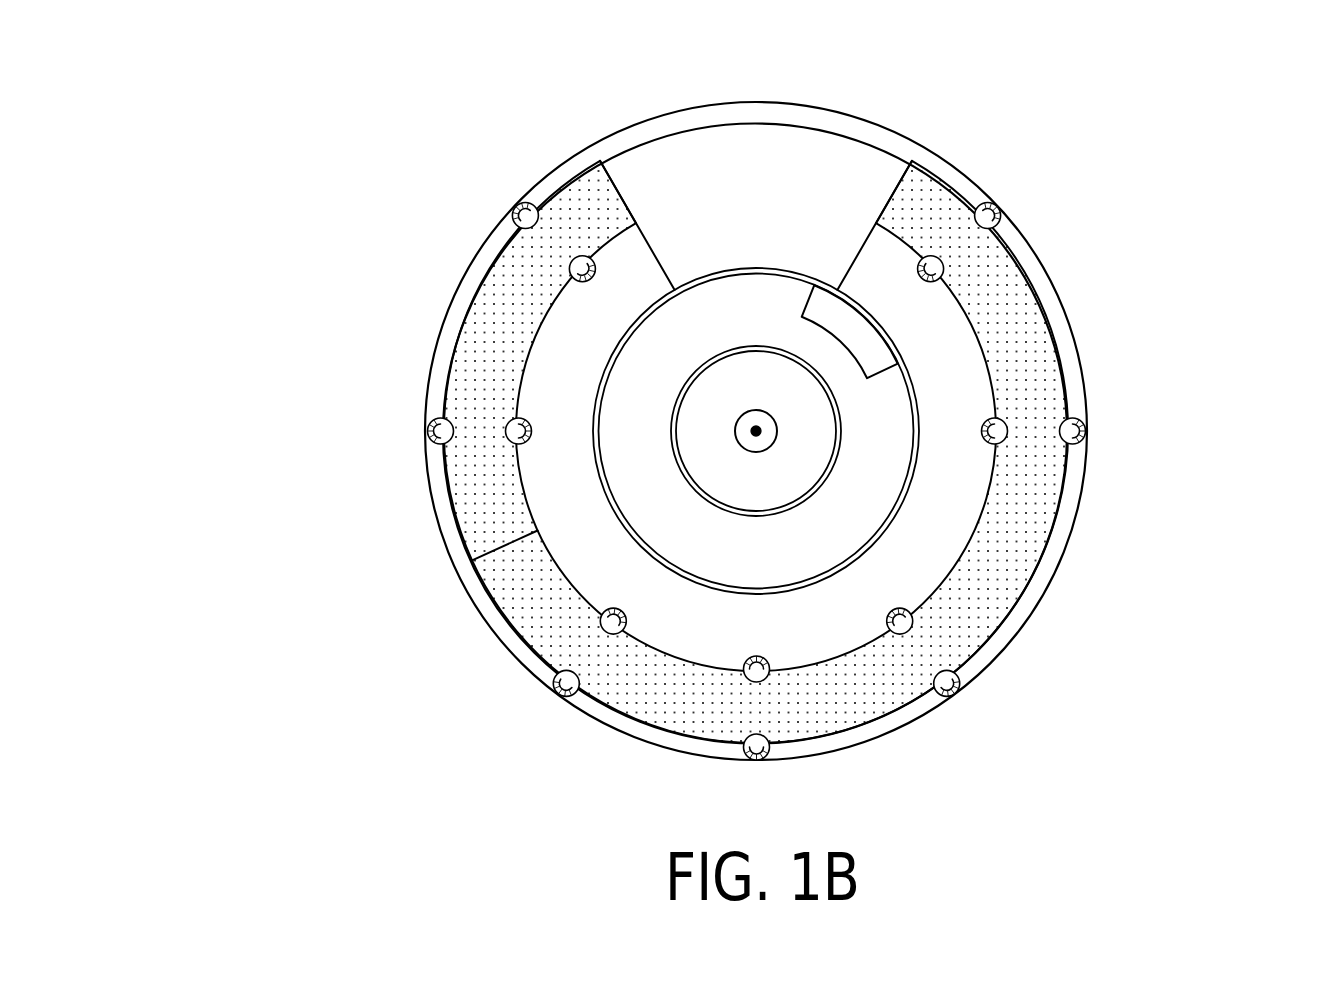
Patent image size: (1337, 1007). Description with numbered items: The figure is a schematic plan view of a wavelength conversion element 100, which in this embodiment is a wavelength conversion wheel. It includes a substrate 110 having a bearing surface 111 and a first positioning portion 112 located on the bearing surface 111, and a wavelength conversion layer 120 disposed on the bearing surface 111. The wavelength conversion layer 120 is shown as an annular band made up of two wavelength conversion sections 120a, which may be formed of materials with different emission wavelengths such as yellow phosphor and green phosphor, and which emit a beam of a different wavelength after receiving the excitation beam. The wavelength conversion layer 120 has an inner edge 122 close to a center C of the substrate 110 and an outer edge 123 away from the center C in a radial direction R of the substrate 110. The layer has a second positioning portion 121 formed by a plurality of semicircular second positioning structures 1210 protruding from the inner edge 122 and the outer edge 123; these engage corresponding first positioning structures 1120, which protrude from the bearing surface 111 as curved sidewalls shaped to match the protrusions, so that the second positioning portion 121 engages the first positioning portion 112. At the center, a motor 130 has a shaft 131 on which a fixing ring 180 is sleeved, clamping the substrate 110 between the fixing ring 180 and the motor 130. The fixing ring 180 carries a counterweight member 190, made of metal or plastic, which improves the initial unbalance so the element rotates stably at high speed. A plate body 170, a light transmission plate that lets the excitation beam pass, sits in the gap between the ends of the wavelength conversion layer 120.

The wavelength conversion element 100 is at (332, 143).
The substrate 110 is at (788, 101).
The bearing surface 111 is at (950, 545).
The first positioning portion 112 is at (864, 471).
The first positioning structure 1120 is at (998, 225).
The wavelength conversion layer 120 is at (687, 452).
The wavelength conversion section 120a is at (478, 500).
The second positioning portion 121 is at (912, 469).
The second positioning structure 1210 is at (930, 263).
The inner edge 122 is at (1001, 354).
The outer edge 123 is at (955, 180).
The motor 130 is at (705, 585).
The shaft 131 is at (727, 477).
The plate body 170 is at (697, 150).
The fixing ring 180 is at (703, 325).
The counterweight member 190 is at (823, 305).
The radial direction R is at (756, 431).
The center C is at (760, 440).